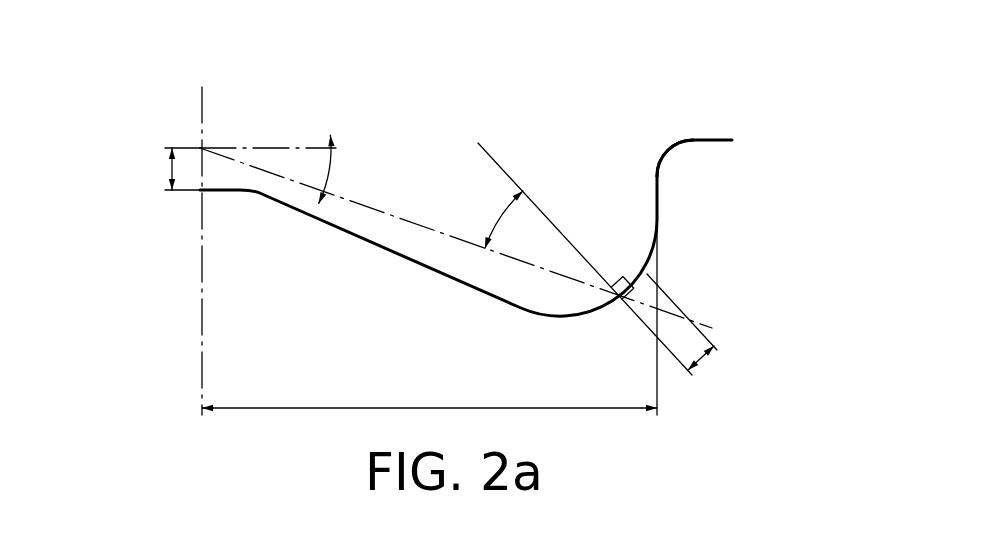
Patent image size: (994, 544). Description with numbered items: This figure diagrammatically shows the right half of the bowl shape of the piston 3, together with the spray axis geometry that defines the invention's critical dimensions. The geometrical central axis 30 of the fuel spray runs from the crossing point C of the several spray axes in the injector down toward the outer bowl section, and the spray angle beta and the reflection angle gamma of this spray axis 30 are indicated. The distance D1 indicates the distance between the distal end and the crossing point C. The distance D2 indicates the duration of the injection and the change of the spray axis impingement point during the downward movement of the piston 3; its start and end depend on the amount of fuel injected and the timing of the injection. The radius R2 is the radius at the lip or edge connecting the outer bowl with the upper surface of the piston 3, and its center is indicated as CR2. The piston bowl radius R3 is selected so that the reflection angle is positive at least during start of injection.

The crossing point C is at (200, 148).
The geometrical central axis of the spray 30 is at (455, 238).
The radius at the lip R2 is at (693, 170).
The piston 3 is at (693, 232).
The center of radius R2 CR2 is at (668, 151).
The distance between distal end and crossing point D1 is at (165, 168).
The distance indicating injection duration D2 is at (700, 364).
The piston bowl radius R3 is at (429, 317).